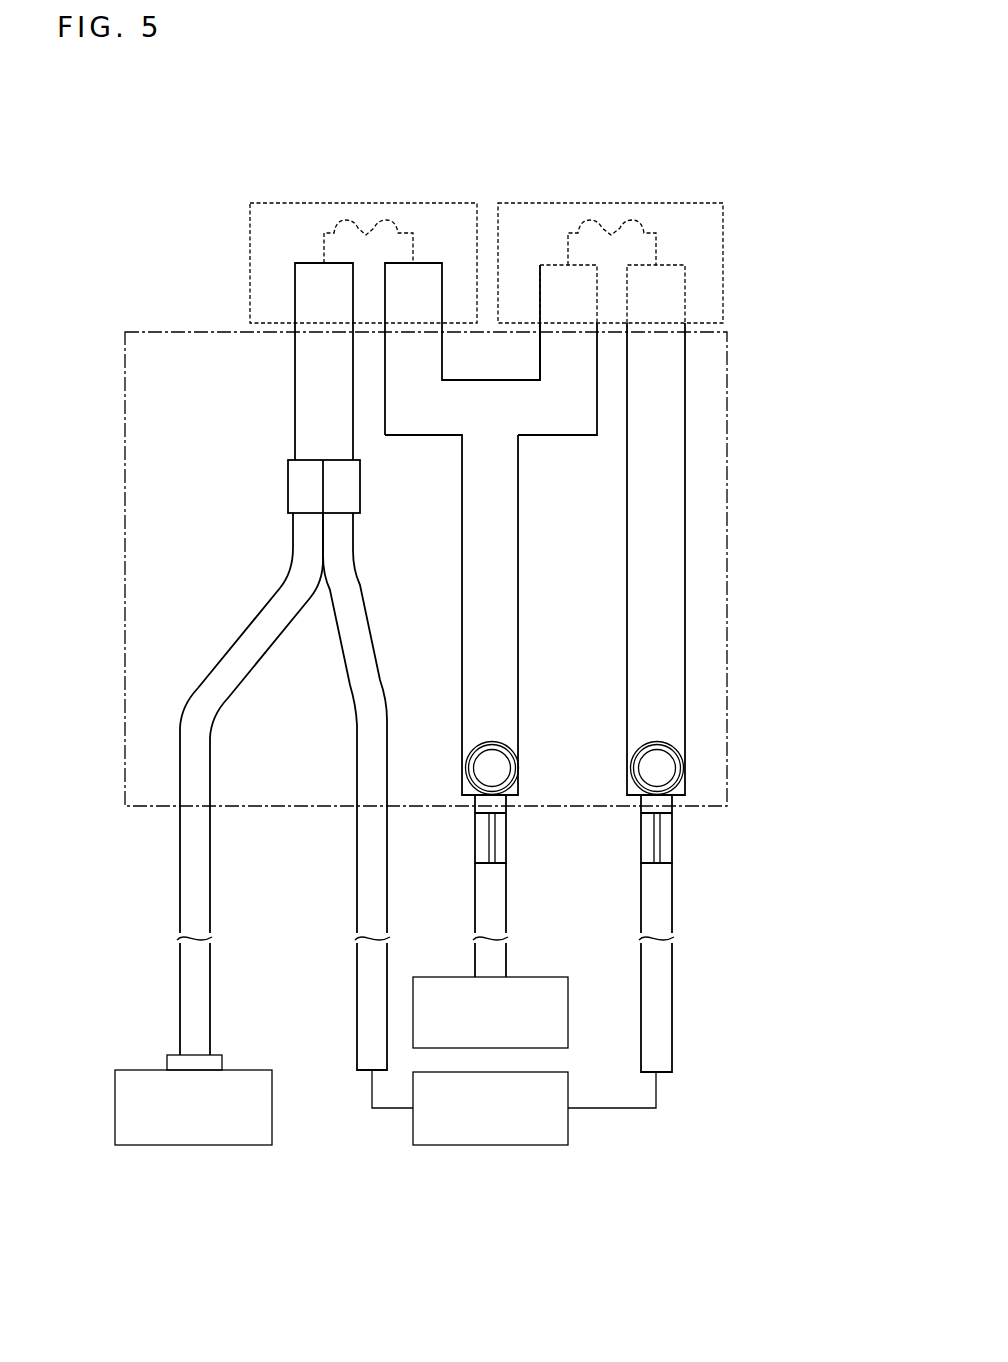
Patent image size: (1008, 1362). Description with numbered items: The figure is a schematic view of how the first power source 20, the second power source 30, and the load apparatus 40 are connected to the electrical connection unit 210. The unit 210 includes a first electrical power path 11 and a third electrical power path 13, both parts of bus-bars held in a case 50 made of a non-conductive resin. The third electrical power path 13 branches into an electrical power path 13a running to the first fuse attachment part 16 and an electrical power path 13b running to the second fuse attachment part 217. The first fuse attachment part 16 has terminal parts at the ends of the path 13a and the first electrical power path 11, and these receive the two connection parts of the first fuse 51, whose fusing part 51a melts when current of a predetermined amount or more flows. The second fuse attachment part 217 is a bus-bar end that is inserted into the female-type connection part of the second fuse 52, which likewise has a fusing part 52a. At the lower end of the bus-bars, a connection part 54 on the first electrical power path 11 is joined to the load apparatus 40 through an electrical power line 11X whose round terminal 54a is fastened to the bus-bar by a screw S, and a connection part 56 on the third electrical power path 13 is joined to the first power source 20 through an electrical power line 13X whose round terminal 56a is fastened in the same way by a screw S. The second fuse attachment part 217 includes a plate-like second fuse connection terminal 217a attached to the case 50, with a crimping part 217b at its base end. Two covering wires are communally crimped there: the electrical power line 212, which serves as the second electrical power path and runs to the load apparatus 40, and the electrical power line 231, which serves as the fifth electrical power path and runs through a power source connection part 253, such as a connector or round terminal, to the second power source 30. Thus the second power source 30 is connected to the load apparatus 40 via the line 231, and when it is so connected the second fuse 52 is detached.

The electrical connection unit 210 is at (766, 184).
The case 50 is at (181, 330).
The first fuse 51 is at (702, 213).
The fusing part 51a is at (610, 229).
The second fuse 52 is at (334, 212).
The fusing part 52a is at (366, 229).
The first electrical power path 11 is at (639, 636).
The third electrical power path 13 is at (491, 529).
The electrical power path 13a is at (543, 420).
The electrical power path 13b is at (429, 426).
The first fuse attachment part 16 is at (650, 300).
The second fuse attachment part 217 is at (306, 388).
The second fuse connection terminal 217a is at (310, 432).
The crimping part 217b is at (300, 492).
The electrical power line 212 is at (355, 636).
The electrical power line 231 is at (192, 895).
The power source connection part 253 is at (172, 1066).
The connection part 54 is at (665, 780).
The round terminal 54a is at (665, 754).
The connection part 56 is at (493, 789).
The round terminal 56a is at (500, 752).
The screw S is at (519, 767).
The electrical power line 11X is at (654, 902).
The electrical power line 13X is at (482, 902).
The first power source 20 is at (533, 976).
The second power source 30 is at (187, 1146).
The load apparatus 40 is at (527, 1146).